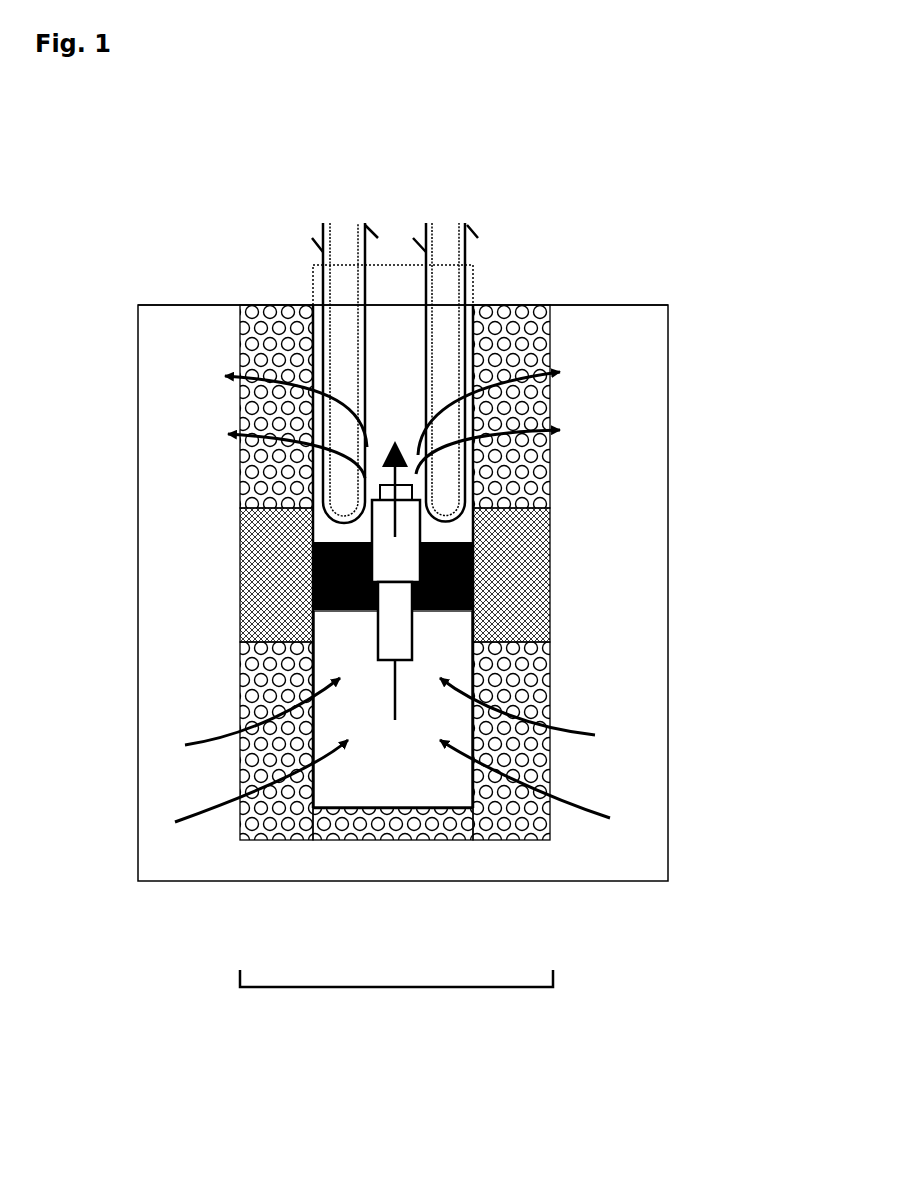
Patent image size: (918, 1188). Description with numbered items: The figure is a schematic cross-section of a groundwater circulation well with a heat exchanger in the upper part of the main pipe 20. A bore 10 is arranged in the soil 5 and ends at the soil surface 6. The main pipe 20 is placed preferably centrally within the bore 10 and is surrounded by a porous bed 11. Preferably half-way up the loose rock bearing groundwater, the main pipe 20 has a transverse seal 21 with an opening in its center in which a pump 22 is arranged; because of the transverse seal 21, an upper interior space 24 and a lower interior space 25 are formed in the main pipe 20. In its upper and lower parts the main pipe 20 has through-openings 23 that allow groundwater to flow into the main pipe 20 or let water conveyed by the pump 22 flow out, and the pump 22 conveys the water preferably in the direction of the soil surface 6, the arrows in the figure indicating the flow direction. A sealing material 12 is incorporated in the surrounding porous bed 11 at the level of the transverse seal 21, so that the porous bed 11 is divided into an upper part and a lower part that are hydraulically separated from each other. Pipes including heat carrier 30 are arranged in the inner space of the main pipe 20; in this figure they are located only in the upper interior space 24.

The soil 5 is at (625, 722).
The soil surface 6 is at (630, 303).
The bore 10 is at (396, 996).
The porous bed 11 is at (537, 478).
The sealing material 12 is at (270, 548).
The main pipe 20 is at (430, 810).
The transverse seal 21 is at (318, 585).
The pump 22 is at (385, 537).
The through-openings 23 is at (330, 462).
The upper interior space 24 is at (393, 320).
The lower interior space 25 is at (358, 775).
The pipes including heat carrier 30 is at (365, 285).